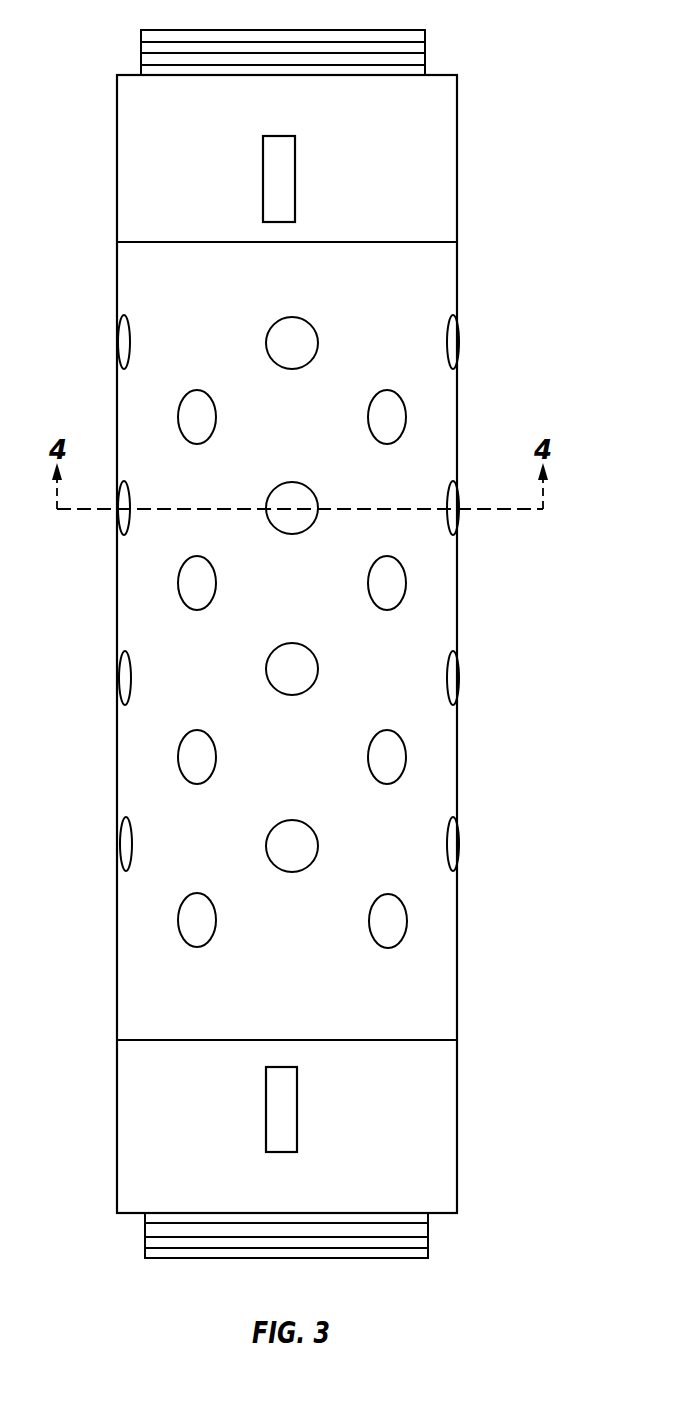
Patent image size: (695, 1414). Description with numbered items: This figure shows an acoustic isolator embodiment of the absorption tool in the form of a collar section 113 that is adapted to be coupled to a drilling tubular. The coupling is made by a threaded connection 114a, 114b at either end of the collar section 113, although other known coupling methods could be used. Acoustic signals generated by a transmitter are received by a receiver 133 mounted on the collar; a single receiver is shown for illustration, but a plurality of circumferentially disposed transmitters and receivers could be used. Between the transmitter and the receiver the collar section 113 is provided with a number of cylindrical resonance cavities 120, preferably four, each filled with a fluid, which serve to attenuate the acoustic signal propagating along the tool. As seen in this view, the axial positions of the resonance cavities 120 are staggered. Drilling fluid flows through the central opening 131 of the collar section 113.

The collar section 113 is at (457, 602).
The threaded connection 114a is at (425, 47).
The threaded connection 114b is at (428, 1235).
The cavities 120 is at (395, 758).
The central opening 131 is at (299, 1125).
The receiver 133 is at (297, 175).